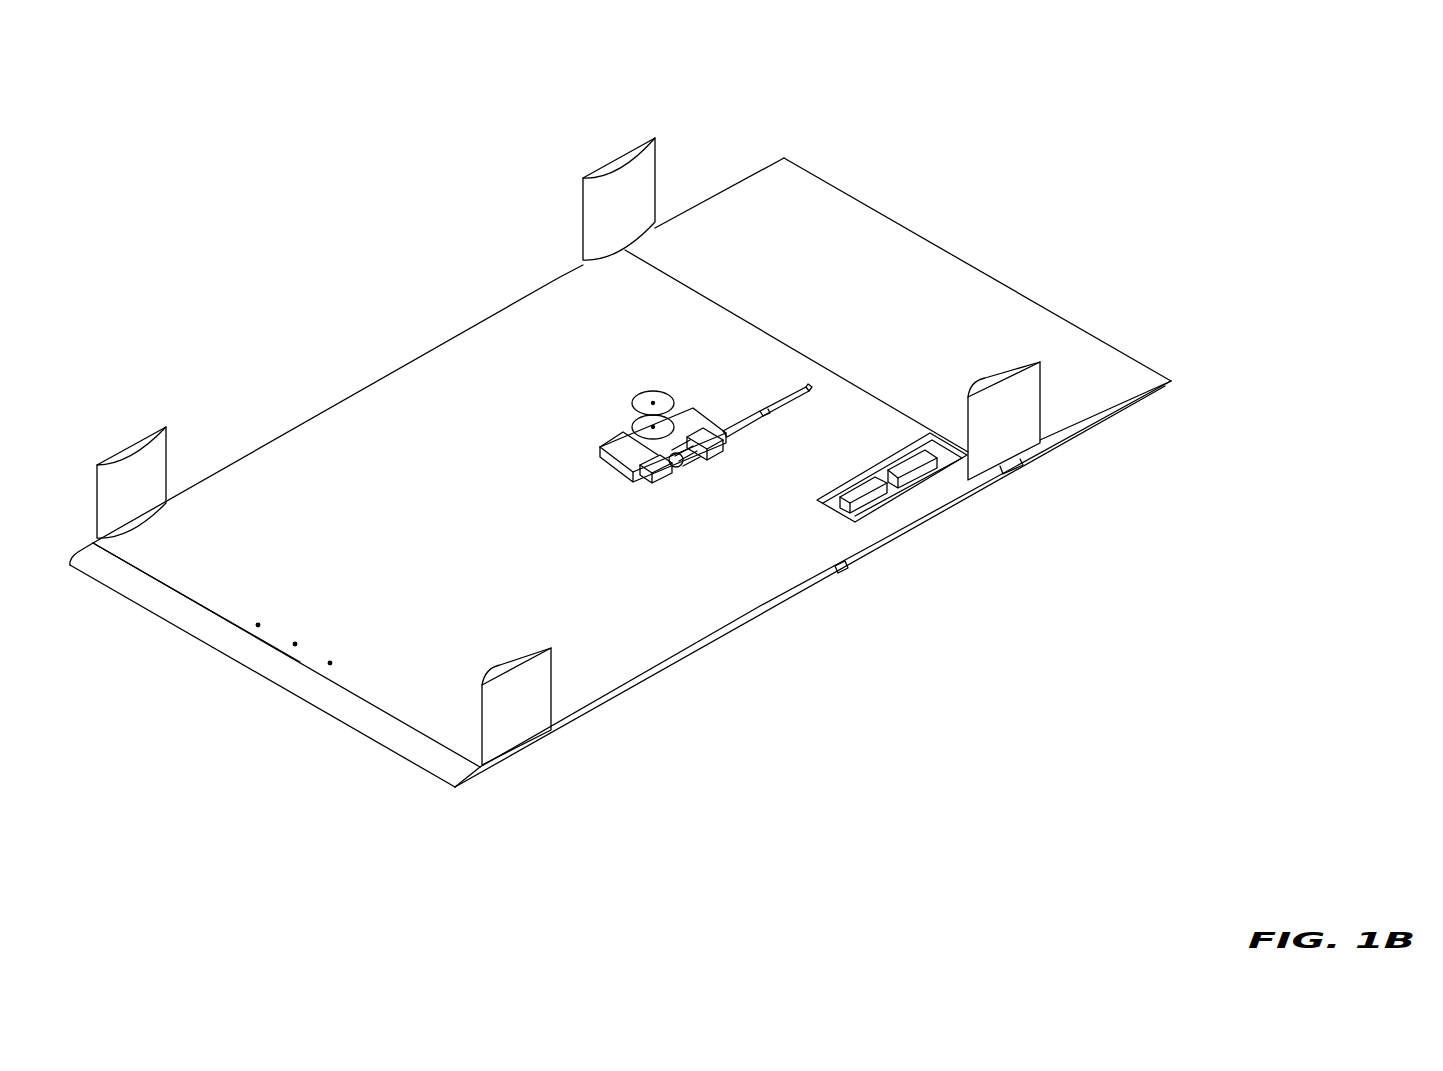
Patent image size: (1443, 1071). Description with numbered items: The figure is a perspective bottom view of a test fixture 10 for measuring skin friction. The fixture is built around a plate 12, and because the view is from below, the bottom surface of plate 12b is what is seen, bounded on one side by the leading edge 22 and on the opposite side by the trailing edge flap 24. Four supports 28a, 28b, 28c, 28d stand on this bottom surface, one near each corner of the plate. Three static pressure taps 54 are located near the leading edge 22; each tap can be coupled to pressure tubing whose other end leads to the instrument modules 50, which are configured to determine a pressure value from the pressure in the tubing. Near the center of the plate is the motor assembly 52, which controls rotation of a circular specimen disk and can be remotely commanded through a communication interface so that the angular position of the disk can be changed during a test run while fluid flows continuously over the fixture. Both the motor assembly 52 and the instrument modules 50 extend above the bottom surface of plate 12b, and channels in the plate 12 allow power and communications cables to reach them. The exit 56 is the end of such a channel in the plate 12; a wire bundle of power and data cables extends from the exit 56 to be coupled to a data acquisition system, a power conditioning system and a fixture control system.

The test fixture 10 is at (305, 92).
The plate 12 is at (597, 705).
The bottom surface of plate 12b is at (277, 602).
The leading edge 22 is at (403, 753).
The trailing edge flap 24 is at (898, 362).
The support 28a is at (131, 482).
The support 28b is at (619, 199).
The support 28c is at (503, 723).
The support 28d is at (1004, 421).
The instrument modules 50 is at (922, 468).
The motor assembly 52 is at (668, 493).
The static pressure taps 54 is at (330, 663).
The exit 56 is at (845, 573).